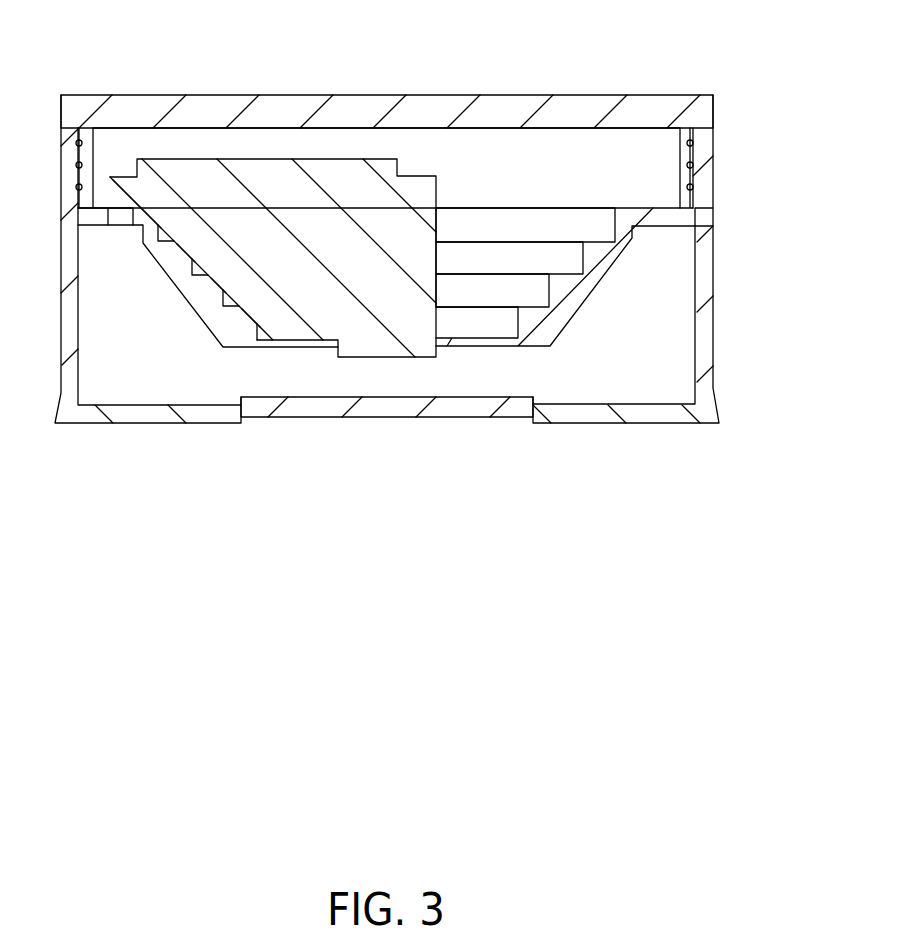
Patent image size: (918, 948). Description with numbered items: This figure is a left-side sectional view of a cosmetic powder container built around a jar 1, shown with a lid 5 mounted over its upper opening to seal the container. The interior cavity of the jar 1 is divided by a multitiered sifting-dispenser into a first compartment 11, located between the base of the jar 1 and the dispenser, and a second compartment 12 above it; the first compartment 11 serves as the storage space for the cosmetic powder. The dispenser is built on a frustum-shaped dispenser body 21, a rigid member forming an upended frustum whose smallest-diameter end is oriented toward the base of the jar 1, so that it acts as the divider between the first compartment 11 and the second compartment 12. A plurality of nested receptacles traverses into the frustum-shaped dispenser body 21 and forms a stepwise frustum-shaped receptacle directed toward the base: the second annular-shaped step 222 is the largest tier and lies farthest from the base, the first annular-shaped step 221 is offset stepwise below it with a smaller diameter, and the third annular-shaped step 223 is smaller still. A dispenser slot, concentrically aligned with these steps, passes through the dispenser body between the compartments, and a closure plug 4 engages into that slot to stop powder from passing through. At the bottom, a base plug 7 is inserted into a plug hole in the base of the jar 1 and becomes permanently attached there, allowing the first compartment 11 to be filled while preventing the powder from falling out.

The jar 1 is at (713, 275).
The lid 5 is at (668, 107).
The second compartment 12 is at (574, 183).
The closure plug 4 is at (427, 196).
The first compartment 11 is at (133, 357).
The frustum-shaped dispenser body 21 is at (561, 320).
The second annular-shaped step 222 is at (572, 237).
The first annular-shaped step 221 is at (490, 268).
The third annular-shaped step 223 is at (450, 300).
The base plug 7 is at (375, 415).